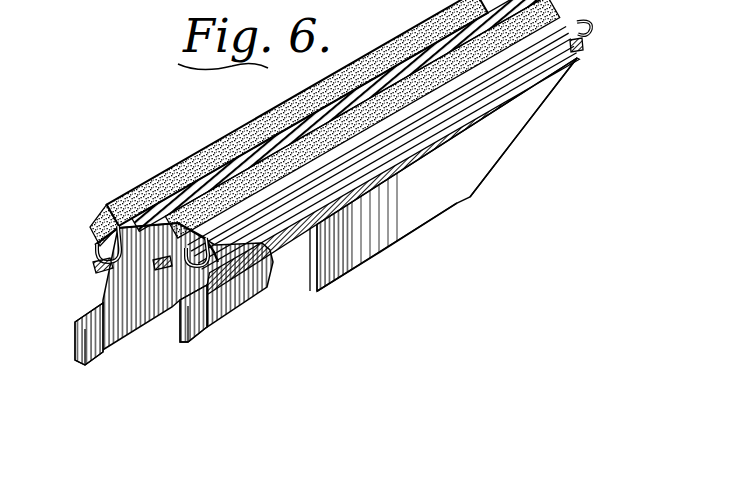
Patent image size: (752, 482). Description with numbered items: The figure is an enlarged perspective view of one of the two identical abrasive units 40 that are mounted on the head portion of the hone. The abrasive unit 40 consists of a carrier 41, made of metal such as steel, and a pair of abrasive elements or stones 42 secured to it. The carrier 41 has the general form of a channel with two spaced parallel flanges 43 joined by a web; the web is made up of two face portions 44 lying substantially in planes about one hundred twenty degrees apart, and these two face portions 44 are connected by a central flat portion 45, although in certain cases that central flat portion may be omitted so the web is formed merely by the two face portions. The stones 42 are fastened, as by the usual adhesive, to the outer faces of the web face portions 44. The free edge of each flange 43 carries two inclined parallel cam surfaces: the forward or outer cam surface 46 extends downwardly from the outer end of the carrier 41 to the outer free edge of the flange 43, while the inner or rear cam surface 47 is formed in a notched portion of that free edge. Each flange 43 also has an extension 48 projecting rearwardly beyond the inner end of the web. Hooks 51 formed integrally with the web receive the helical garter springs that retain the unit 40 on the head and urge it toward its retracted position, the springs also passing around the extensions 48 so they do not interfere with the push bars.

The abrasive unit 40 is at (403, 270).
The carrier 41 is at (462, 172).
The abrasive element 42 is at (180, 173).
The flange 43 is at (435, 207).
The face portion 44 is at (117, 227).
The central flat portion 45 is at (222, 148).
The outer cam surface 46 is at (540, 101).
The rear cam surface 47 is at (262, 286).
The extension 48 is at (96, 352).
The hook 51 is at (158, 270).